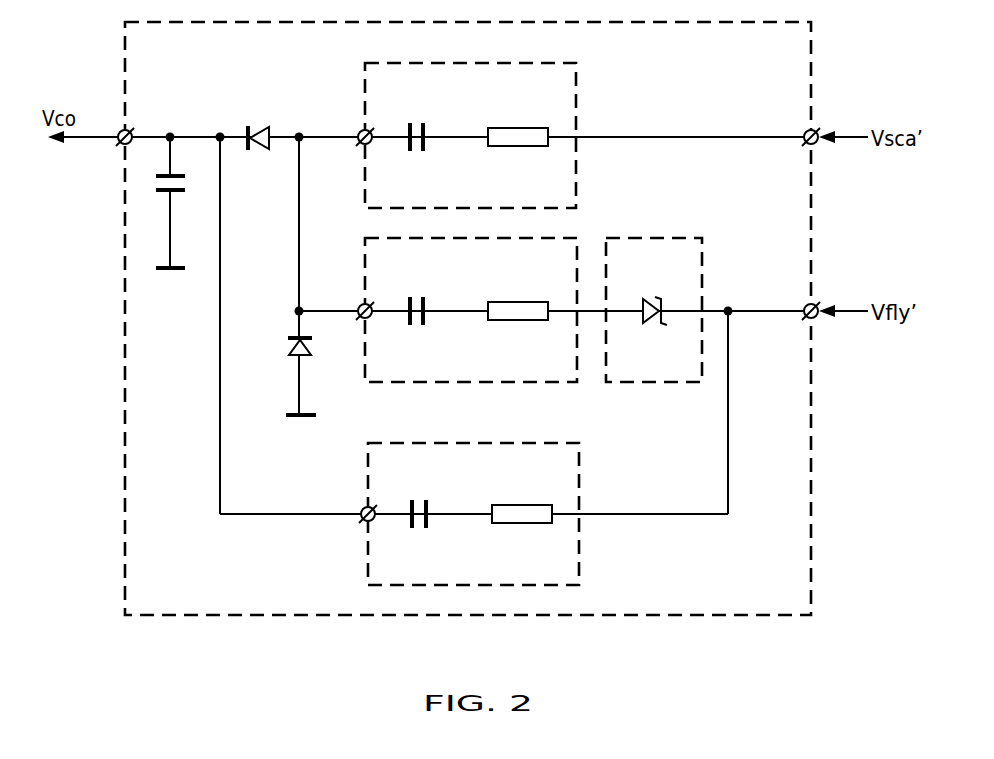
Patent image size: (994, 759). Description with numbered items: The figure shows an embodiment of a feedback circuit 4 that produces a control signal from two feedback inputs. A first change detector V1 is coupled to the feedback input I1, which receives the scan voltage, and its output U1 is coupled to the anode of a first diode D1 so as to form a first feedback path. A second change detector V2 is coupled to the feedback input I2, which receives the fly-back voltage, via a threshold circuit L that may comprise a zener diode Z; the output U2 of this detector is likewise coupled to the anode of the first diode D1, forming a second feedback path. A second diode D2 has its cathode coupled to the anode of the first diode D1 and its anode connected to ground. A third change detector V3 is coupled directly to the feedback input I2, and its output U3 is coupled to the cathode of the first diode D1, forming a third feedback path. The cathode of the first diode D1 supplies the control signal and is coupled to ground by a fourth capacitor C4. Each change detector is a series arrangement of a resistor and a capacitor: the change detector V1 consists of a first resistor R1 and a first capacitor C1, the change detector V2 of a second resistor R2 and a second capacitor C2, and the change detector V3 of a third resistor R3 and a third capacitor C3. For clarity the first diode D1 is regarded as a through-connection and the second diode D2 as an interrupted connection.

The feedback circuit 4 is at (811, 58).
The change detector V1 is at (365, 66).
The change detector V2 is at (365, 241).
The change detector V3 is at (368, 446).
The output U1 is at (361, 130).
The output U2 is at (361, 304).
The output U3 is at (364, 507).
The feedback input I1 is at (816, 130).
The feedback input I2 is at (816, 304).
The first capacitor C1 is at (417, 122).
The second capacitor C2 is at (417, 296).
The third capacitor C3 is at (419, 499).
The fourth capacitor C4 is at (186, 184).
The first resistor R1 is at (511, 136).
The second resistor R2 is at (511, 310).
The third resistor R3 is at (515, 513).
The first diode D1 is at (263, 124).
The second diode D2 is at (290, 350).
The zener diode Z is at (651, 300).
The threshold circuit L is at (702, 249).